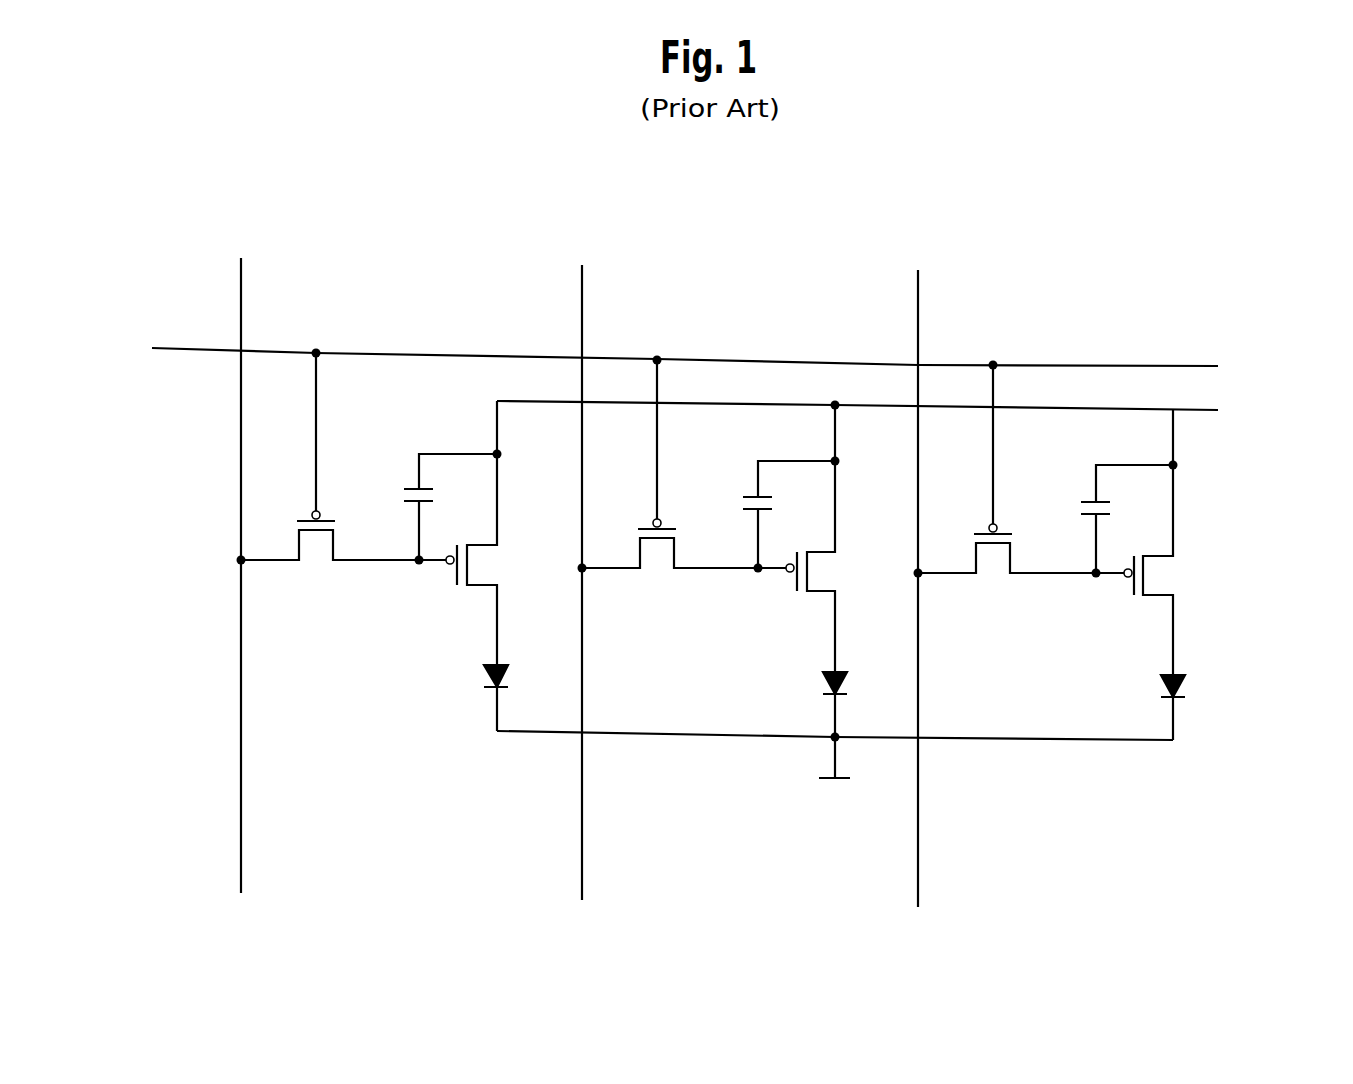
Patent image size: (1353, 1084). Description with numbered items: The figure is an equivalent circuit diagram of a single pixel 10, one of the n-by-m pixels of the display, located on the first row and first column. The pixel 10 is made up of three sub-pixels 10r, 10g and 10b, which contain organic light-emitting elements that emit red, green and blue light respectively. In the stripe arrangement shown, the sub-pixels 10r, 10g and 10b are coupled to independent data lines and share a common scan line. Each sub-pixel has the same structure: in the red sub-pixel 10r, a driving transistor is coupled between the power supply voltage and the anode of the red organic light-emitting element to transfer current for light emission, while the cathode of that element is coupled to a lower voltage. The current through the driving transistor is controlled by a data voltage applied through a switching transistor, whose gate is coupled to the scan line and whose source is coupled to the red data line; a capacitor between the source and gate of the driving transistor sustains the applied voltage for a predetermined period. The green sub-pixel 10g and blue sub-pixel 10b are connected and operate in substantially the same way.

The pixel 10 is at (725, 199).
The red sub-pixel 10r is at (376, 838).
The green sub-pixel 10g is at (716, 845).
The blue sub-pixel 10b is at (1055, 850).